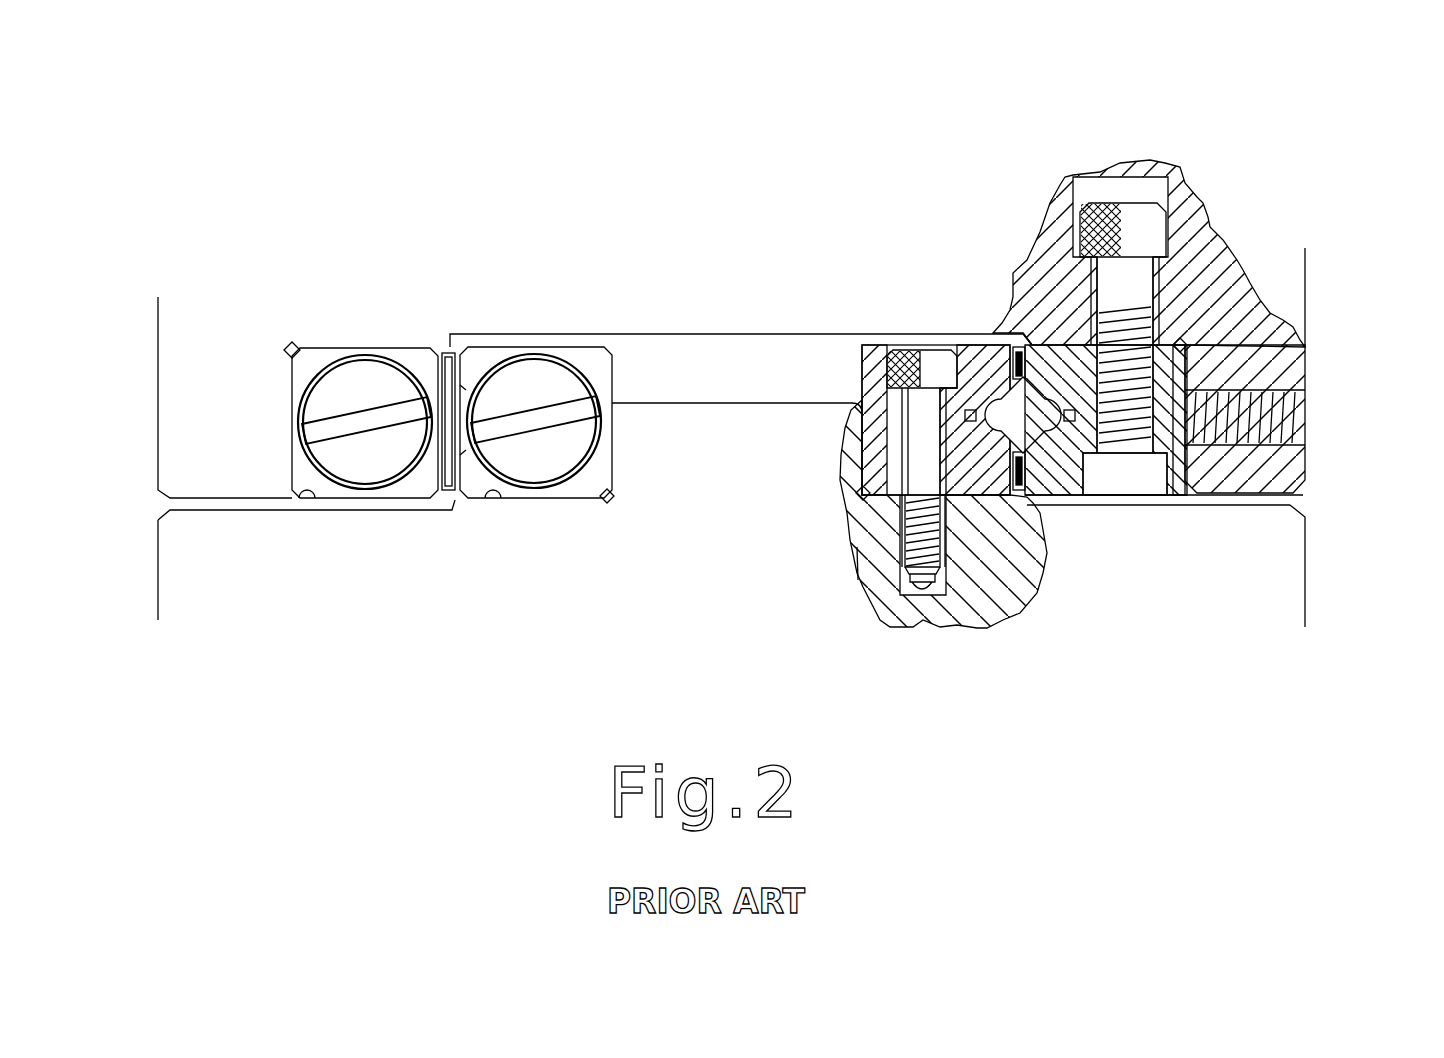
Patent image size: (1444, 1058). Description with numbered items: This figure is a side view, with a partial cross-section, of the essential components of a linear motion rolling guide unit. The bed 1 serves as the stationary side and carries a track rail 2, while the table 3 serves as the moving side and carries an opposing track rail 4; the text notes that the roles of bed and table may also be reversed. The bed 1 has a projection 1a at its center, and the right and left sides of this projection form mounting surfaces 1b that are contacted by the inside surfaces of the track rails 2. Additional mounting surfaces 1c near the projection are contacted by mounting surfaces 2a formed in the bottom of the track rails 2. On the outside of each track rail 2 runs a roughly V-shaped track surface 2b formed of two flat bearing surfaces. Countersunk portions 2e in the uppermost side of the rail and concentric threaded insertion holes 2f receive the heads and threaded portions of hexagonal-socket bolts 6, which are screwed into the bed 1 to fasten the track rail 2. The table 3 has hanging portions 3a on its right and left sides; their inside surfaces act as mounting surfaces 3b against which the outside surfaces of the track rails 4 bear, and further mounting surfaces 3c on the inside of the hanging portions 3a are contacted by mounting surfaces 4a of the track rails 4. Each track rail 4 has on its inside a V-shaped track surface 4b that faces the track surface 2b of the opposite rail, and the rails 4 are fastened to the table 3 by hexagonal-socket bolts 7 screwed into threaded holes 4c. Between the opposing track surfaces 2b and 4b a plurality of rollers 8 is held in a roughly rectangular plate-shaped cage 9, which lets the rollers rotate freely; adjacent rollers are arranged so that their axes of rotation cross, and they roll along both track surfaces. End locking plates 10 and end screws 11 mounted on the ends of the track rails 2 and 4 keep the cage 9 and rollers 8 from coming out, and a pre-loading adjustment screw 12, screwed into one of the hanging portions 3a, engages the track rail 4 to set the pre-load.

The bed 1 is at (708, 567).
The projection 1a is at (723, 443).
The mounting surfaces 1b is at (590, 502).
The mounting surfaces 1c is at (505, 500).
The track rail 2 is at (858, 346).
The mounting surfaces 2a is at (1023, 585).
The track surfaces 2b is at (995, 405).
The countersunk portions 2e is at (946, 376).
The threaded insertion holes 2f is at (860, 440).
The table 3 is at (750, 311).
The hanging portions 3a is at (193, 418).
The mounting surfaces 3b is at (315, 498).
The mounting surfaces 3c is at (293, 378).
The track rail 4 is at (1178, 372).
The mounting surfaces 4a is at (1087, 332).
The track surfaces 4b is at (1050, 338).
The threaded holes 4c is at (1135, 410).
The bolts 6 is at (897, 352).
The bolts 7 is at (1137, 223).
The rollers 8 is at (428, 400).
The cage 9 is at (447, 355).
The end locking plates 10 is at (315, 356).
The end screws 11 is at (368, 378).
The pre-loading adjustment screw 12 is at (1240, 417).